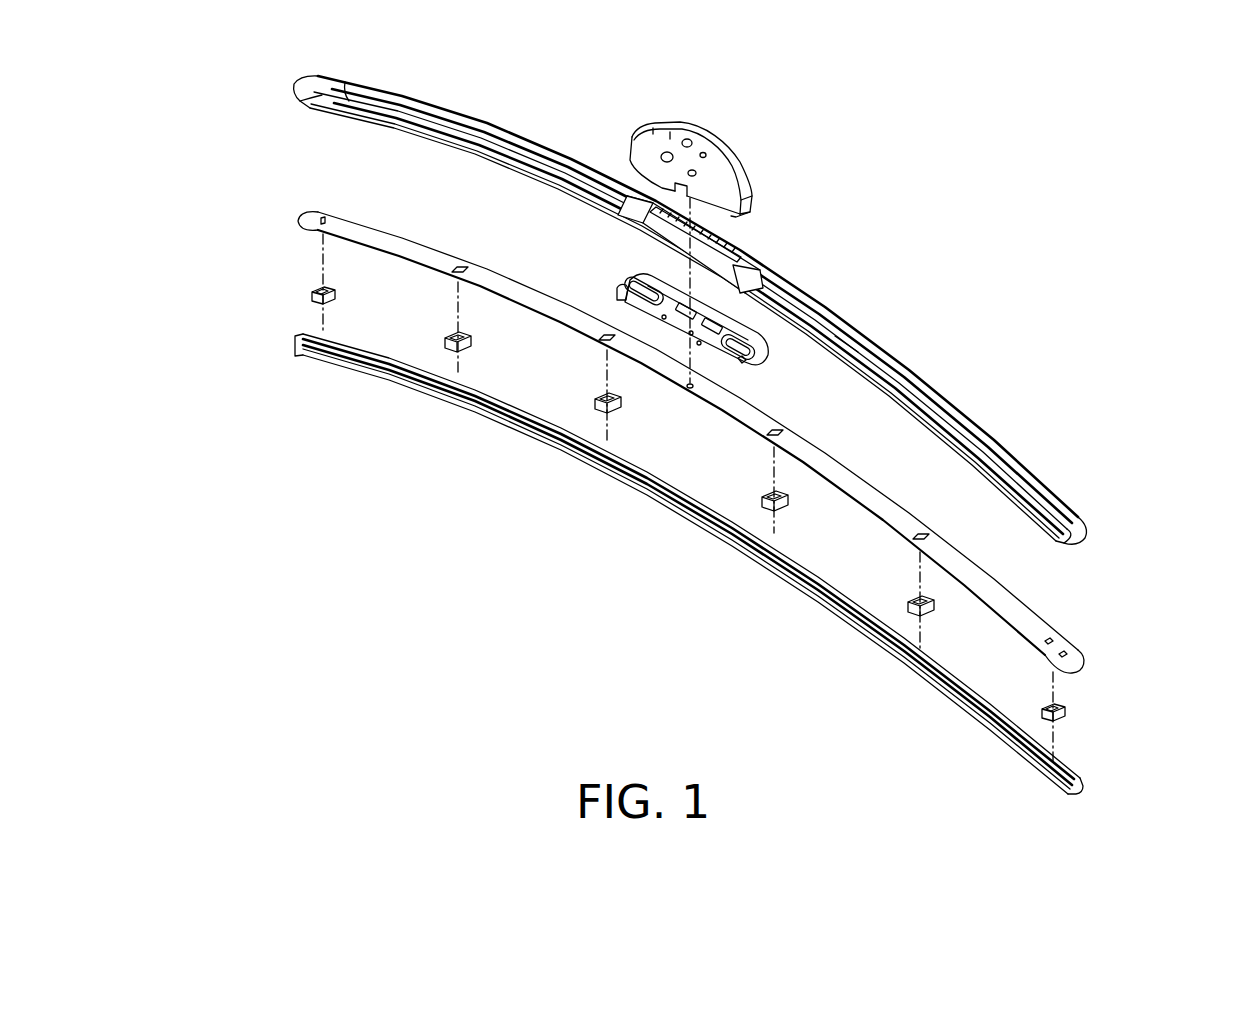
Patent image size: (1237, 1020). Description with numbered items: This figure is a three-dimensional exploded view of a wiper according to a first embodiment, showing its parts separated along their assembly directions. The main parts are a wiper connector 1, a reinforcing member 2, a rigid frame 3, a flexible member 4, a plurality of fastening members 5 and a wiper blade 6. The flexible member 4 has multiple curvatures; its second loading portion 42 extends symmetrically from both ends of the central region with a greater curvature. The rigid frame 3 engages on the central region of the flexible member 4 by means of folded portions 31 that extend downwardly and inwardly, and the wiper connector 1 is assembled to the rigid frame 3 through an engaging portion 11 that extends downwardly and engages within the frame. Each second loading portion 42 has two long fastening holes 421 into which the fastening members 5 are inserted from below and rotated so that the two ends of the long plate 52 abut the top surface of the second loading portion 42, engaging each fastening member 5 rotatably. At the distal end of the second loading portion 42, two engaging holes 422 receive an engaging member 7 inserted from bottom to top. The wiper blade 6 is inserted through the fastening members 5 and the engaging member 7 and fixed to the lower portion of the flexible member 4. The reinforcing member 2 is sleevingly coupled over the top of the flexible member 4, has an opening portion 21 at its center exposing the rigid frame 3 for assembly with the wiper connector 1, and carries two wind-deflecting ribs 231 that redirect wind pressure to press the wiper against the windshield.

The wiper connector 1 is at (686, 166).
The engaging portion 11 is at (668, 192).
The reinforcing member 2 is at (899, 353).
The opening portion 21 is at (712, 256).
The wind-deflecting ribs 231 is at (856, 354).
The rigid frame 3 is at (663, 334).
The folded portions 31 is at (742, 355).
The flexible member 4 is at (723, 412).
The second loading portion 42 is at (877, 505).
The fastening holes 421 is at (459, 265).
The engaging holes 422 is at (336, 222).
The fastening member 5 is at (692, 462).
The long plate 52 is at (468, 337).
The wiper blade 6 is at (579, 461).
The engaging member 7 is at (314, 288).